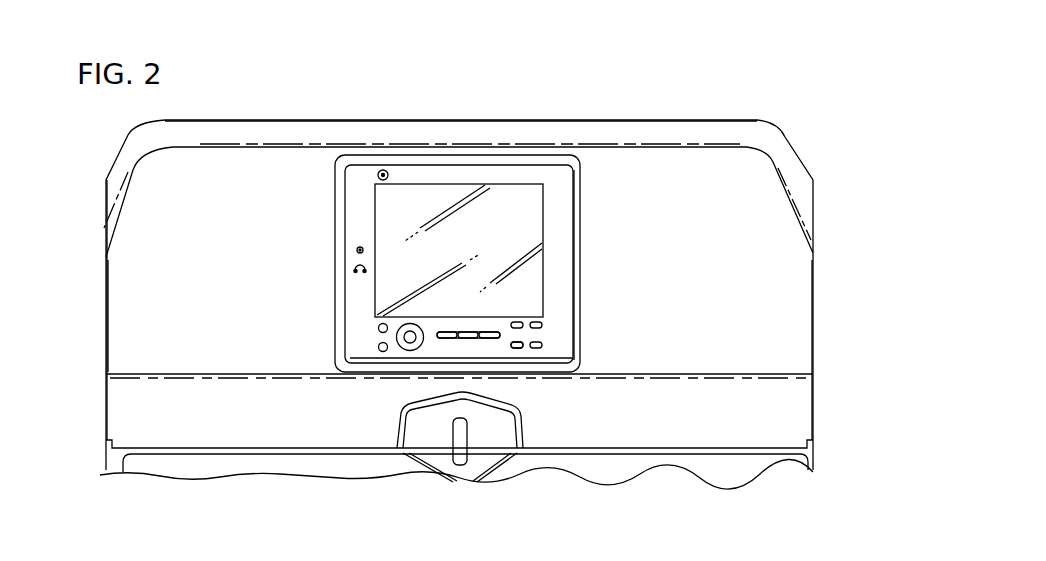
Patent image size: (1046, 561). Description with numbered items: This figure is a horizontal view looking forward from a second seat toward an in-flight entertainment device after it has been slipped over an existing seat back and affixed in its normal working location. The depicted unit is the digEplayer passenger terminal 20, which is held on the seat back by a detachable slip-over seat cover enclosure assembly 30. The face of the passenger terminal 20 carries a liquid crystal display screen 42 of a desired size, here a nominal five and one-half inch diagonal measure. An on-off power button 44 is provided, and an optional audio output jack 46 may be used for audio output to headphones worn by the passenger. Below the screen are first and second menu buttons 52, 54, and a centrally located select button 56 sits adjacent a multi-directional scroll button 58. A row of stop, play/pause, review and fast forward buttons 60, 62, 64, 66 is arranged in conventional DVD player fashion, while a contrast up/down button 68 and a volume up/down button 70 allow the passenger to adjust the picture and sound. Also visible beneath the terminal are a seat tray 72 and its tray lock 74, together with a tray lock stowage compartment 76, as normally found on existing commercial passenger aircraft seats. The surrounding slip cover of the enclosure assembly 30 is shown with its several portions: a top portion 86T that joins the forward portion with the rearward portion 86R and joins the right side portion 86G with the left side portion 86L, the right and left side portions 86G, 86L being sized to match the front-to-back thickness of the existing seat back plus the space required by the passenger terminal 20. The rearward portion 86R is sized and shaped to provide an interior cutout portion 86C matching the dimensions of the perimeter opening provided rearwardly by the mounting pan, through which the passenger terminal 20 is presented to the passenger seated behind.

The passenger terminal 20 is at (560, 183).
The slip-over seat cover enclosure assembly 30 is at (717, 120).
The liquid crystal display (LCD) screen 42 is at (484, 246).
The on-off power button 44 is at (378, 176).
The audio output jack 46 is at (357, 250).
The first menu button 52 is at (378, 328).
The second menu button 54 is at (378, 347).
The select button 56 is at (411, 340).
The multi-directional scroll button 58 is at (400, 343).
The stop button 60 is at (442, 331).
The play/pause button 62 is at (465, 331).
The review button 64 is at (487, 331).
The fast forward button 66 is at (493, 338).
The contrast up/down button 68 is at (522, 348).
The volume up/down button 70 is at (547, 345).
The seat tray 72 is at (562, 463).
The tray lock 74 is at (467, 458).
The tray lock stowage compartment 76 is at (433, 427).
The top portion 86T is at (268, 132).
The left side portion 86L is at (106, 257).
The rearward portion 86R is at (135, 293).
The interior cutout portion 86C is at (582, 232).
The right side portion 86G is at (813, 313).